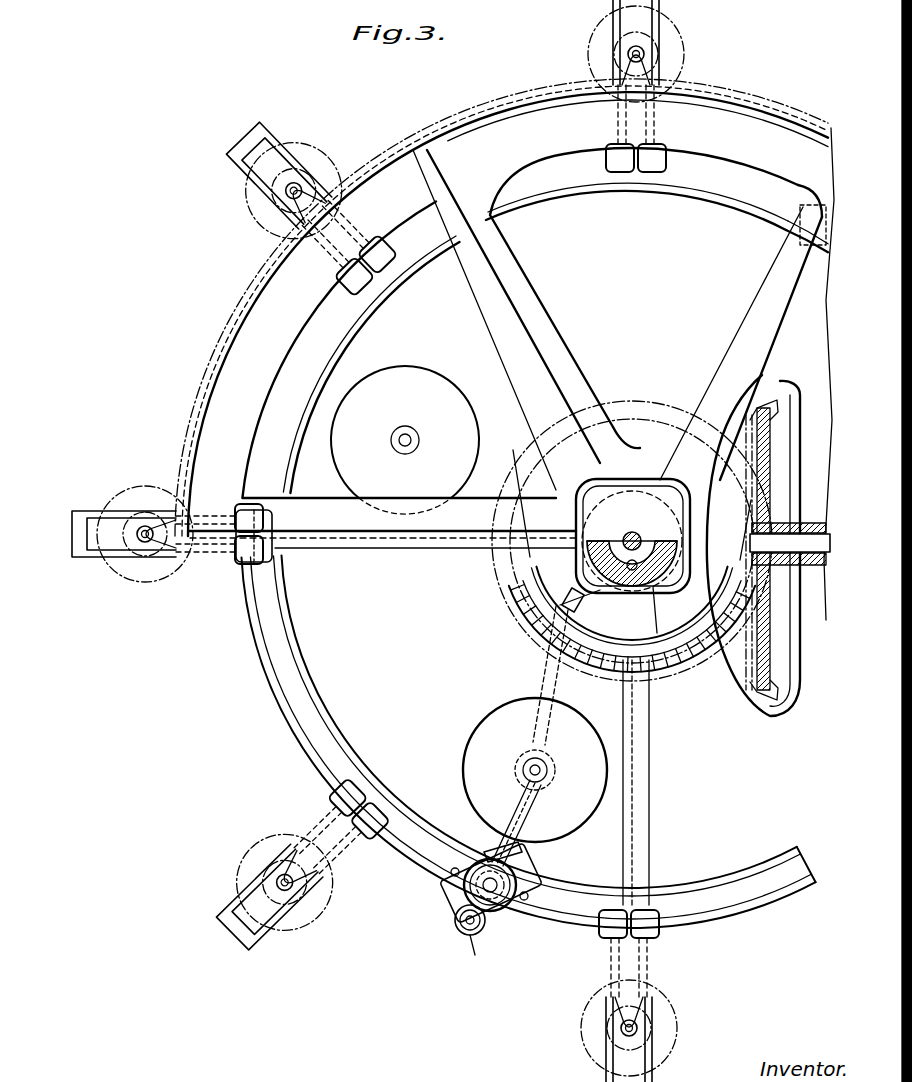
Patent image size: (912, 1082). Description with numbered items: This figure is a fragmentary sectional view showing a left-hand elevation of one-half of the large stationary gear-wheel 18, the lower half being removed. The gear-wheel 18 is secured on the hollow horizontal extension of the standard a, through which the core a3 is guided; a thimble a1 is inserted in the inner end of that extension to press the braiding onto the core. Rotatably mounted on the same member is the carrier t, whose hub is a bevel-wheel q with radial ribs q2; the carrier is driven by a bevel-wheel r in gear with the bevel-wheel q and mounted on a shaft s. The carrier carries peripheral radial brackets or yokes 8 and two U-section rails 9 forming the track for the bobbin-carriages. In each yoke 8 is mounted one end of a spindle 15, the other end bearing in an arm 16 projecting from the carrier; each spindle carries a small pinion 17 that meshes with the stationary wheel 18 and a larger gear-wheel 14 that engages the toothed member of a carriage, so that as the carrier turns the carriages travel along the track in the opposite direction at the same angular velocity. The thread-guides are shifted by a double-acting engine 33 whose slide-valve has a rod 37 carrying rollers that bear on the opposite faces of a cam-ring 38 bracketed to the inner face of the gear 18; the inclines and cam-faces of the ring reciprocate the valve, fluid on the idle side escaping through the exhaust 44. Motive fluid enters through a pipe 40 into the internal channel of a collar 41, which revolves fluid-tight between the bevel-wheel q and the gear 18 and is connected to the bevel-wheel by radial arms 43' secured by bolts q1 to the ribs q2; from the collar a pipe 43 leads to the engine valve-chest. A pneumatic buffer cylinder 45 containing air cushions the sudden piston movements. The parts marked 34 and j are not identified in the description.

The radial bracket or yoke 8 is at (670, 25).
The rails 9 is at (529, 741).
The gear-wheel 14 is at (135, 490).
The spindle 15 is at (660, 55).
The arm 16 is at (690, 70).
The pinion 17 is at (600, 52).
The stationary gear-wheel 18 is at (744, 96).
The double-acting engine 33 is at (505, 915).
The bracket plate 34 is at (525, 865).
The valve rod 37 is at (455, 920).
The cam-ring 38 is at (672, 192).
The supply pipe 40 is at (648, 545).
The collar 41 is at (669, 616).
The pipe 43 is at (569, 736).
The radial arms 43' is at (564, 584).
The exhaust 44 is at (540, 878).
The buffer cylinder 45 is at (487, 957).
The standard a is at (648, 500).
The thimble a1 is at (636, 530).
The core a3 is at (620, 559).
The wheel j is at (469, 604).
The bevel-wheel q is at (655, 420).
The bolts q1 is at (595, 606).
The radial ribs q2 is at (632, 541).
The driving bevel-wheel r is at (790, 462).
The shaft s is at (798, 570).
The carrier t is at (653, 800).